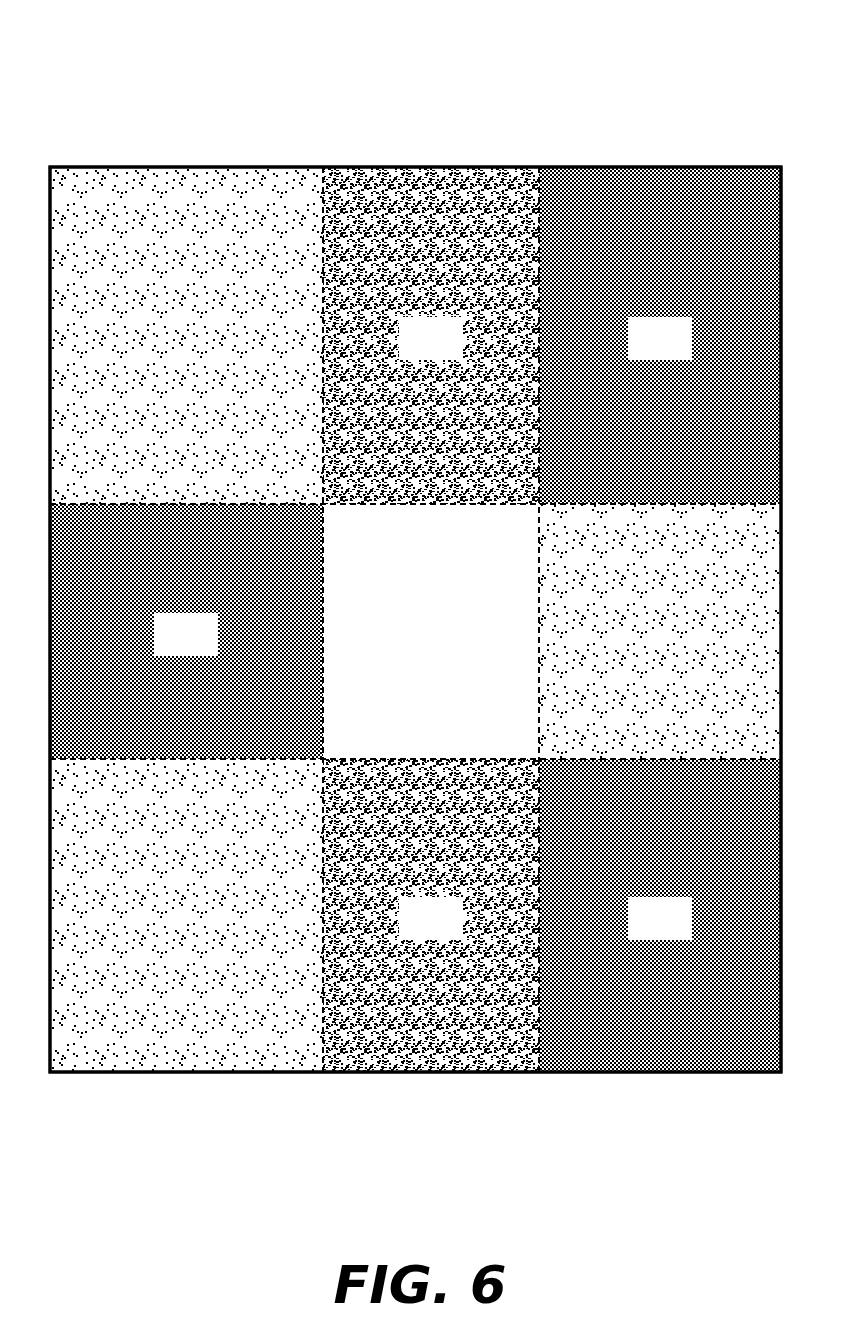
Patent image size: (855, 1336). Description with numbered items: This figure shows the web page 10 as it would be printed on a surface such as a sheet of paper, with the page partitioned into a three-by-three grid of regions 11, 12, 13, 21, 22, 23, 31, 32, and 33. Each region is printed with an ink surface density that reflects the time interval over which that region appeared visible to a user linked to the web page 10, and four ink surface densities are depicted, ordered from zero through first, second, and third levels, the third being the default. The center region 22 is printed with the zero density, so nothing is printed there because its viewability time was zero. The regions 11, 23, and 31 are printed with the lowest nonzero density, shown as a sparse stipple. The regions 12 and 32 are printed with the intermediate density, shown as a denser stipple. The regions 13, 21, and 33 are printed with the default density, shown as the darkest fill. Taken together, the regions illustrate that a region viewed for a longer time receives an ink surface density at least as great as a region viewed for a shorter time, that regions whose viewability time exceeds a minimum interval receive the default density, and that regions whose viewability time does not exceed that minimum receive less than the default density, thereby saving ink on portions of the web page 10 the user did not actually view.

The web page 10 is at (399, 106).
The region 11 is at (110, 214).
The region 12 is at (385, 214).
The region 13 is at (605, 214).
The region 21 is at (110, 552).
The region 22 is at (385, 552).
The region 23 is at (605, 552).
The region 31 is at (110, 807).
The region 32 is at (385, 807).
The region 33 is at (605, 807).